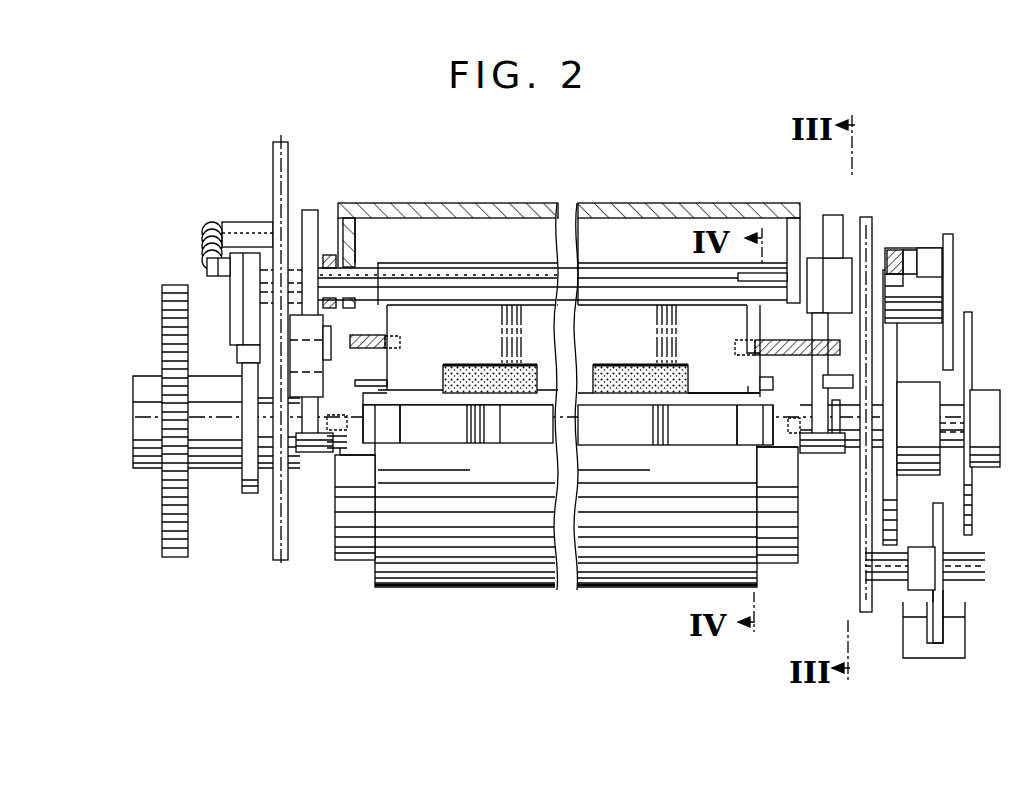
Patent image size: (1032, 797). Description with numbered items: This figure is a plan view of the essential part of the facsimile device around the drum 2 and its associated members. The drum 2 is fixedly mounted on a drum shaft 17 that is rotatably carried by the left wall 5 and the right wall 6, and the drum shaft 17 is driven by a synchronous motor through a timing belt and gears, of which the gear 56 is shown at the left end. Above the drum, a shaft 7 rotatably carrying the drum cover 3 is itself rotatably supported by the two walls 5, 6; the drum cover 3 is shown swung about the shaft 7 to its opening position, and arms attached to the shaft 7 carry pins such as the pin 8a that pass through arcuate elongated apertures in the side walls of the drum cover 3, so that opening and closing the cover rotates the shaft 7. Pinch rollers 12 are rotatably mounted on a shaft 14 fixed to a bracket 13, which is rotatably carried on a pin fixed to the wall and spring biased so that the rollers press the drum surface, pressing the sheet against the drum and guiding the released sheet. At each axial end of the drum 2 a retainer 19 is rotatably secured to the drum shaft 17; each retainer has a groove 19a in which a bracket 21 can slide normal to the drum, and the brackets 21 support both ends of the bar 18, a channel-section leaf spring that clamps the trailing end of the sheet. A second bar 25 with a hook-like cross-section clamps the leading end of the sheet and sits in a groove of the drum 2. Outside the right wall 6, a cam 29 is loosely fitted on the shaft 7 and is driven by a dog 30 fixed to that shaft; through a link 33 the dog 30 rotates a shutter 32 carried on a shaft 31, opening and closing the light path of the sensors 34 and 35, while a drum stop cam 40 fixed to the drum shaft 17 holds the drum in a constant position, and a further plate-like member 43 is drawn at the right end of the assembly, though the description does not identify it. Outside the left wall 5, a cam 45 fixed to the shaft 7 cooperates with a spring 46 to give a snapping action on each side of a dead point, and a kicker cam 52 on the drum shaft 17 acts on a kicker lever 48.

The drum 2 is at (465, 586).
The drum cover 3 is at (449, 206).
The left wall 5 is at (277, 162).
The right wall 6 is at (868, 222).
The shaft 7 is at (377, 268).
The pin 8a is at (748, 278).
The pinch roller 12 is at (484, 367).
The bracket 13 is at (505, 340).
The shaft 14 is at (768, 386).
The drum shaft 17 is at (840, 450).
The bar 18 is at (462, 445).
The retainer 19 is at (336, 540).
The groove 19a is at (366, 448).
The bracket 21 is at (391, 445).
The bar 25 is at (512, 445).
The cam 29 is at (890, 258).
The dog 30 is at (926, 250).
The shaft 31 is at (945, 571).
The shutter 32 is at (944, 600).
The link 33 is at (955, 284).
The sensor 34 is at (937, 556).
The sensor 35 is at (960, 640).
The drum stop cam 40 is at (896, 360).
The plate 43 is at (972, 345).
The cam 45 is at (234, 306).
The spring 46 is at (201, 235).
The kicker lever 48 is at (237, 350).
The kicker cam 52 is at (250, 492).
The gear 56 is at (165, 515).